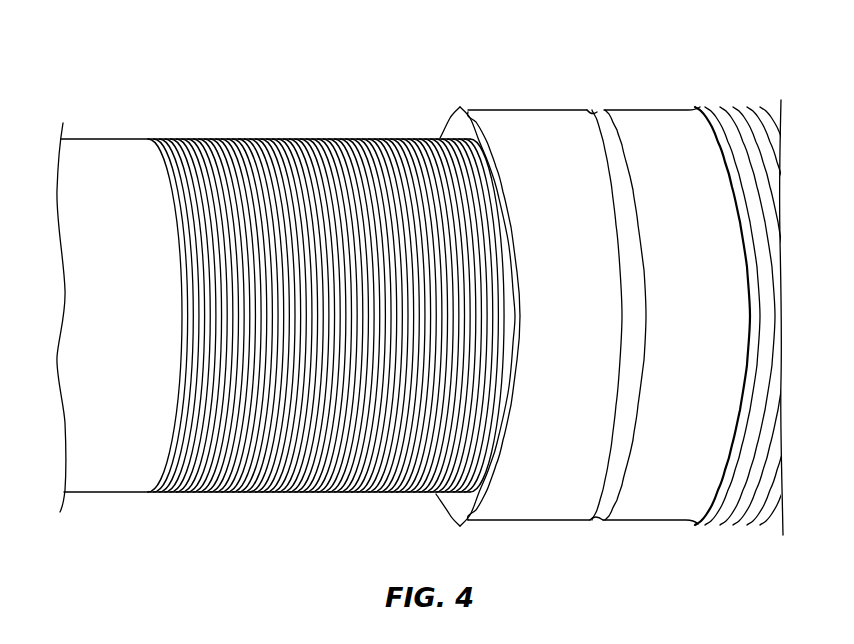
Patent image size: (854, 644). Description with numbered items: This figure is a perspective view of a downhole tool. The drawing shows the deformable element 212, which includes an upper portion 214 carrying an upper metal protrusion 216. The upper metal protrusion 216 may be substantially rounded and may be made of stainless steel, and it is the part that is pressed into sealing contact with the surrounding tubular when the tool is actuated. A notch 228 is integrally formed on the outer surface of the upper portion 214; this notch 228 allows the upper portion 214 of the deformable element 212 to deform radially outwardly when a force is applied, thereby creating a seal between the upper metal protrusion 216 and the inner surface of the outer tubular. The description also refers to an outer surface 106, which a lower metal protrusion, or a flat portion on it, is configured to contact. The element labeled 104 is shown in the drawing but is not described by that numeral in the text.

The hose 104 is at (366, 494).
The outer surface 106 is at (346, 138).
The deformable element 212 is at (668, 109).
The upper portion 214 is at (541, 110).
The upper metal protrusion 216 is at (468, 137).
The notch 228 is at (605, 128).